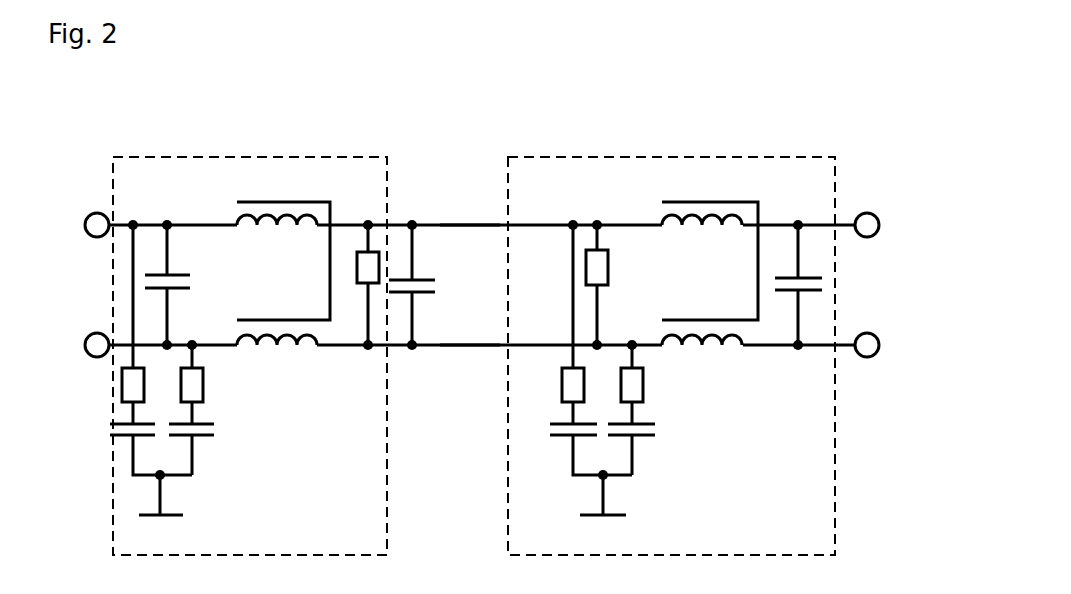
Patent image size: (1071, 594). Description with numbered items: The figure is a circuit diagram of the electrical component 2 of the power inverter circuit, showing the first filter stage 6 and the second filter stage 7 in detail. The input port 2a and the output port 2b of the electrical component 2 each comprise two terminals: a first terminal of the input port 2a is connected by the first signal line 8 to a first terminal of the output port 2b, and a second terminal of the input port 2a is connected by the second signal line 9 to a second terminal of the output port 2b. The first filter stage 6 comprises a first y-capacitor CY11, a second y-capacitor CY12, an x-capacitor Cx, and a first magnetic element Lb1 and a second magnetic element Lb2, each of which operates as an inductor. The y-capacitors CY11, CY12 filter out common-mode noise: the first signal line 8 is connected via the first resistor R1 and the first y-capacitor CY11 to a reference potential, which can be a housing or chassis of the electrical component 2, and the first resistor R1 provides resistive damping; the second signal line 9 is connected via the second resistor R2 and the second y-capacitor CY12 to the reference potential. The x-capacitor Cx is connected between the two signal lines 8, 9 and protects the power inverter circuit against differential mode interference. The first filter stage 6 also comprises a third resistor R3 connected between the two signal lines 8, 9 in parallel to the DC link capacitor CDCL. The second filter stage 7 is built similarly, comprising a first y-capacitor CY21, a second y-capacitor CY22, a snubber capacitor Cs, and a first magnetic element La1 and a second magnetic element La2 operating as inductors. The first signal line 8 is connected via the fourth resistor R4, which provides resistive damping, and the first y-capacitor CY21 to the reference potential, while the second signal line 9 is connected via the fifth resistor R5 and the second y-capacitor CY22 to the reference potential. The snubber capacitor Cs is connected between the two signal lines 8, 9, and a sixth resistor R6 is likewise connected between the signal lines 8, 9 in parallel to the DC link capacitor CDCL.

The electrical component 2 is at (475, 169).
The input port 2a is at (88, 339).
The output port 2b is at (874, 234).
The first filter stage 6 is at (168, 155).
The second filter stage 7 is at (618, 156).
The first signal line 8 is at (447, 222).
The second signal line 9 is at (462, 348).
The first magnetic element Lb1 is at (268, 210).
The second magnetic element Lb2 is at (289, 348).
The first magnetic element La1 is at (705, 210).
The second magnetic element La2 is at (723, 340).
The x-capacitor Cx is at (182, 275).
The DC link capacitor CDCL is at (420, 275).
The snubber capacitor Cs is at (812, 292).
The first resistor R1 is at (120, 385).
The second resistor R2 is at (204, 385).
The third resistor R3 is at (360, 265).
The fourth resistor R4 is at (562, 385).
The fifth resistor R5 is at (644, 385).
The sixth resistor R6 is at (602, 265).
The first y-capacitor CY11 is at (125, 440).
The second y-capacitor CY12 is at (205, 440).
The first y-capacitor CY21 is at (562, 440).
The second y-capacitor CY22 is at (645, 440).